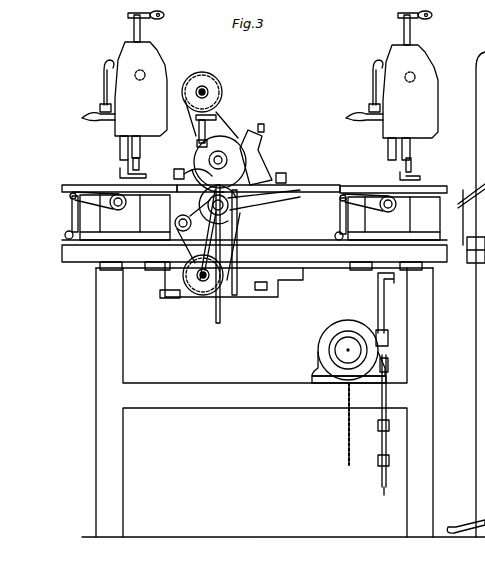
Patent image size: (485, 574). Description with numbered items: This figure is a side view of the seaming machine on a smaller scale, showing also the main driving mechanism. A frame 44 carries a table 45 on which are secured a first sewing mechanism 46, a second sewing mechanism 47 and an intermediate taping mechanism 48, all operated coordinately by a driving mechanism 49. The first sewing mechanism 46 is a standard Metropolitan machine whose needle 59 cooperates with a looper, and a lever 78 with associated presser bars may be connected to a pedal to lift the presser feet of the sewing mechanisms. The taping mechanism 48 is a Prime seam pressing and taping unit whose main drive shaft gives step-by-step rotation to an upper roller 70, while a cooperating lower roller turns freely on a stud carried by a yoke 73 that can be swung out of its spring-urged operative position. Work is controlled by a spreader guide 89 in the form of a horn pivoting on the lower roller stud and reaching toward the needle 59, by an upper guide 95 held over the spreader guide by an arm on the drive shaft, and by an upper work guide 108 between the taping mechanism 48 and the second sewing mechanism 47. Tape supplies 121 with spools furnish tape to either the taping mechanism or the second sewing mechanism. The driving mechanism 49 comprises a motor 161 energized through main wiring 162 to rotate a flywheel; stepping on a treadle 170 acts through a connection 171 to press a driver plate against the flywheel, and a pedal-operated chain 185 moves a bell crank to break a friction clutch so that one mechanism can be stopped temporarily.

The frame 44 is at (92, 372).
The table 45 is at (323, 268).
The first sewing mechanism 46 is at (444, 47).
The second sewing mechanism 47 is at (106, 148).
The taping mechanism 48 is at (268, 242).
The driving mechanism 49 is at (311, 341).
The needle 59 is at (410, 172).
The upper roller 70 is at (222, 150).
The yoke 73 is at (226, 321).
The lever 78 is at (99, 75).
The spreader guide 89 is at (236, 203).
The upper guide 95 is at (262, 168).
The upper work guide 108 is at (178, 169).
The tape supplies 121 is at (209, 57).
The motor 161 is at (328, 358).
The main wiring 162 is at (378, 302).
The treadle 170 is at (466, 524).
The connection 171 is at (380, 481).
The chain 185 is at (346, 452).